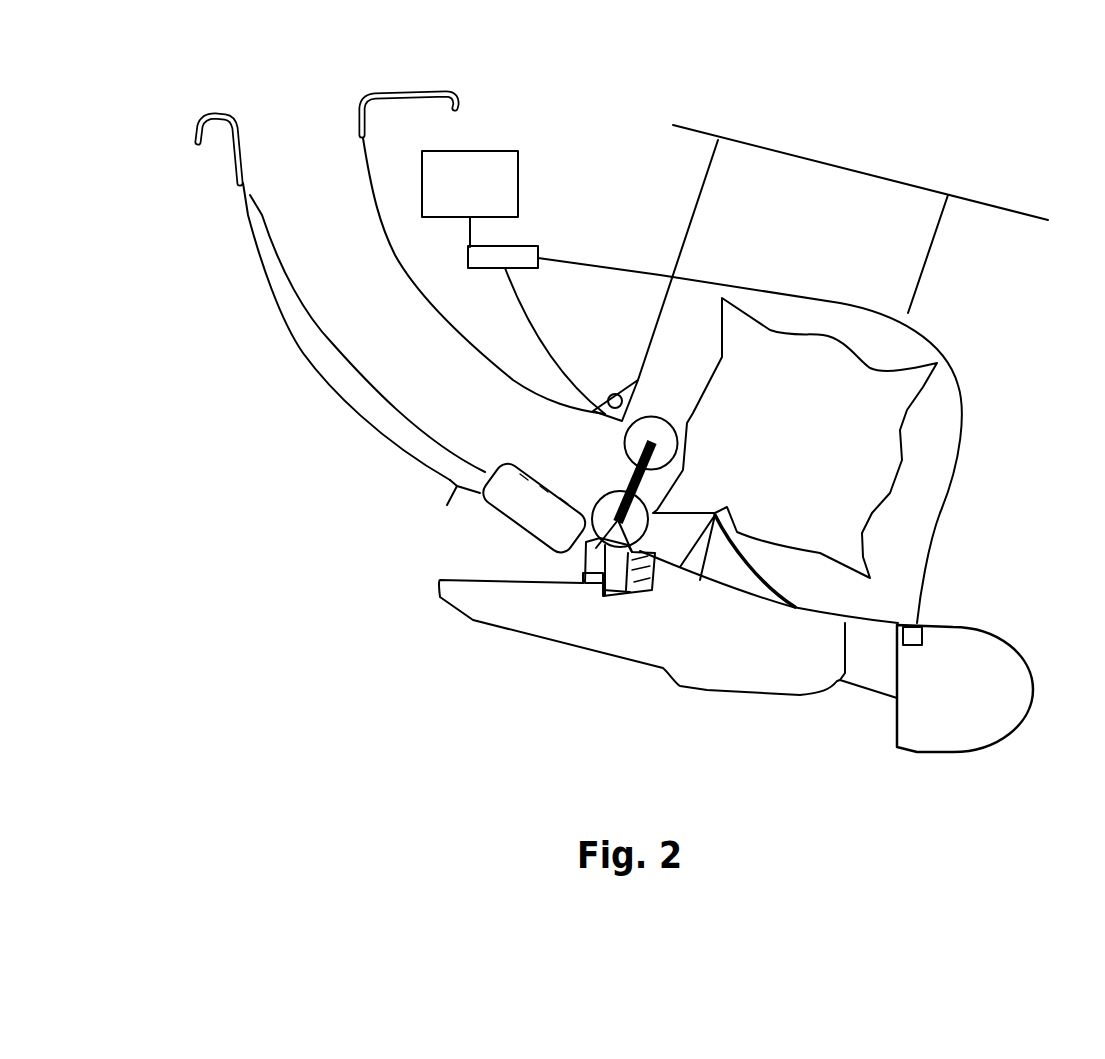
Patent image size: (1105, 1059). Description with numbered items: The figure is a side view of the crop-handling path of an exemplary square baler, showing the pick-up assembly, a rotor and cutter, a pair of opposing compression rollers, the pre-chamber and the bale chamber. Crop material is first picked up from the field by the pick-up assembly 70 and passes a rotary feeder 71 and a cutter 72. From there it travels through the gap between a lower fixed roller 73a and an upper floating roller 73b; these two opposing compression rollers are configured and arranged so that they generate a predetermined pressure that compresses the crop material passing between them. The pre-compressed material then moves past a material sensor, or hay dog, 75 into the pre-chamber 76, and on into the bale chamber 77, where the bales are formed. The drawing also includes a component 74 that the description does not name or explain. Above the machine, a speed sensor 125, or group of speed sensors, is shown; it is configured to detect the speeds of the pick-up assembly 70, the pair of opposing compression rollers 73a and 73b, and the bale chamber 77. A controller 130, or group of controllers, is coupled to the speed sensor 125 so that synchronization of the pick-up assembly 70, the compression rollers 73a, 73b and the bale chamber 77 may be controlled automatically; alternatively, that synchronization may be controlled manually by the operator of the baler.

The pick-up assembly 70 is at (965, 688).
The rotary feeder 71 is at (795, 452).
The cutter 72 is at (753, 597).
The lower fixed roller 73a is at (603, 515).
The upper floating roller 73b is at (603, 397).
The link arm 74 is at (630, 460).
The material sensor 75 is at (480, 520).
The pre-chamber 76 is at (337, 342).
The bale chamber 77 is at (467, 258).
The speed sensor 125 is at (538, 247).
The controller 130 is at (470, 199).